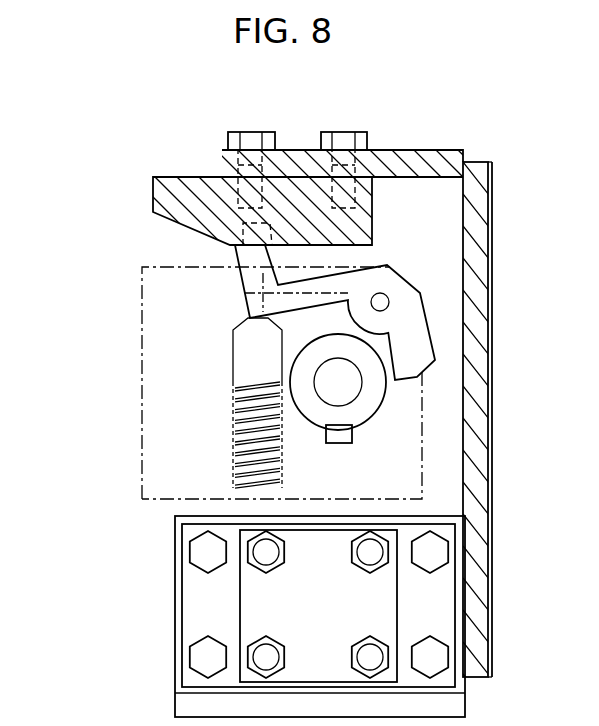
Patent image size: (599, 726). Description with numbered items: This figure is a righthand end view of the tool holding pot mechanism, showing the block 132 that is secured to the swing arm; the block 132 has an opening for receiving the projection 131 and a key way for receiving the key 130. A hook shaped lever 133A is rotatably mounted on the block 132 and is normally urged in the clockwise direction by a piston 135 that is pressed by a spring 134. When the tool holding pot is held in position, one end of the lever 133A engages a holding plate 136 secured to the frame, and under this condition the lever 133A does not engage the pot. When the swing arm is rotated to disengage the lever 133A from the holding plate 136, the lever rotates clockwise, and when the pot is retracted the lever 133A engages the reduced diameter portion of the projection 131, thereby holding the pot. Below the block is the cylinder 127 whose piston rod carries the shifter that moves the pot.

The holding plate 136 is at (186, 177).
The block 132 is at (148, 297).
The hook shaped lever 133A is at (413, 335).
The piston 135 is at (240, 352).
The spring 134 is at (238, 472).
The projection 131 is at (378, 392).
The key 130 is at (352, 438).
The cylinder 127 is at (383, 607).